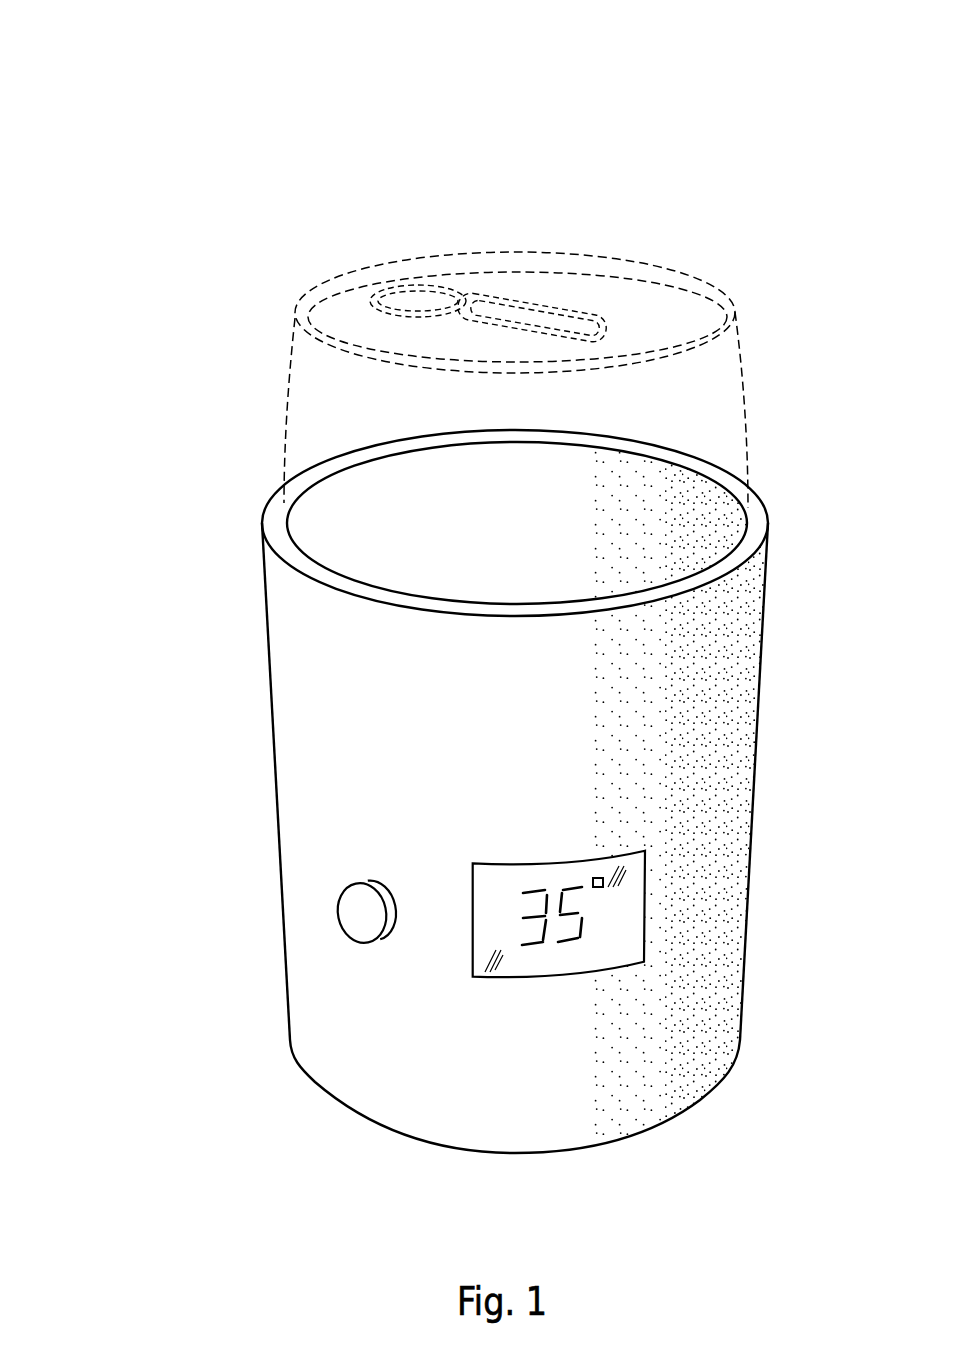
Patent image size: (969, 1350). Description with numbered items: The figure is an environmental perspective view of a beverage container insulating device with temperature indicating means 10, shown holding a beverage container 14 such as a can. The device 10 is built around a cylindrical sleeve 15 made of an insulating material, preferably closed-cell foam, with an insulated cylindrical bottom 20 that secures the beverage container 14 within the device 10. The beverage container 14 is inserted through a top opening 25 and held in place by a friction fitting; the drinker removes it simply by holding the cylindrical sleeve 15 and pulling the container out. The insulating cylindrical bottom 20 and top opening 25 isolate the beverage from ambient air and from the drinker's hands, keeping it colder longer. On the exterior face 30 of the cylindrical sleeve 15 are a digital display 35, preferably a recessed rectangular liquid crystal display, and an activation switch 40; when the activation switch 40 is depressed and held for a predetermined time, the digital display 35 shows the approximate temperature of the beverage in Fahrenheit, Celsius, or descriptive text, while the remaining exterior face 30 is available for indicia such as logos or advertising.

The beverage container insulating device with temperature indicating means 10 is at (127, 112).
The beverage container 14 is at (372, 312).
The cylindrical sleeve 15 is at (763, 647).
The cylindrical bottom 20 is at (295, 1058).
The top opening 25 is at (647, 497).
The exterior face 30 is at (326, 738).
The digital display 35 is at (628, 883).
The activation switch 40 is at (358, 910).